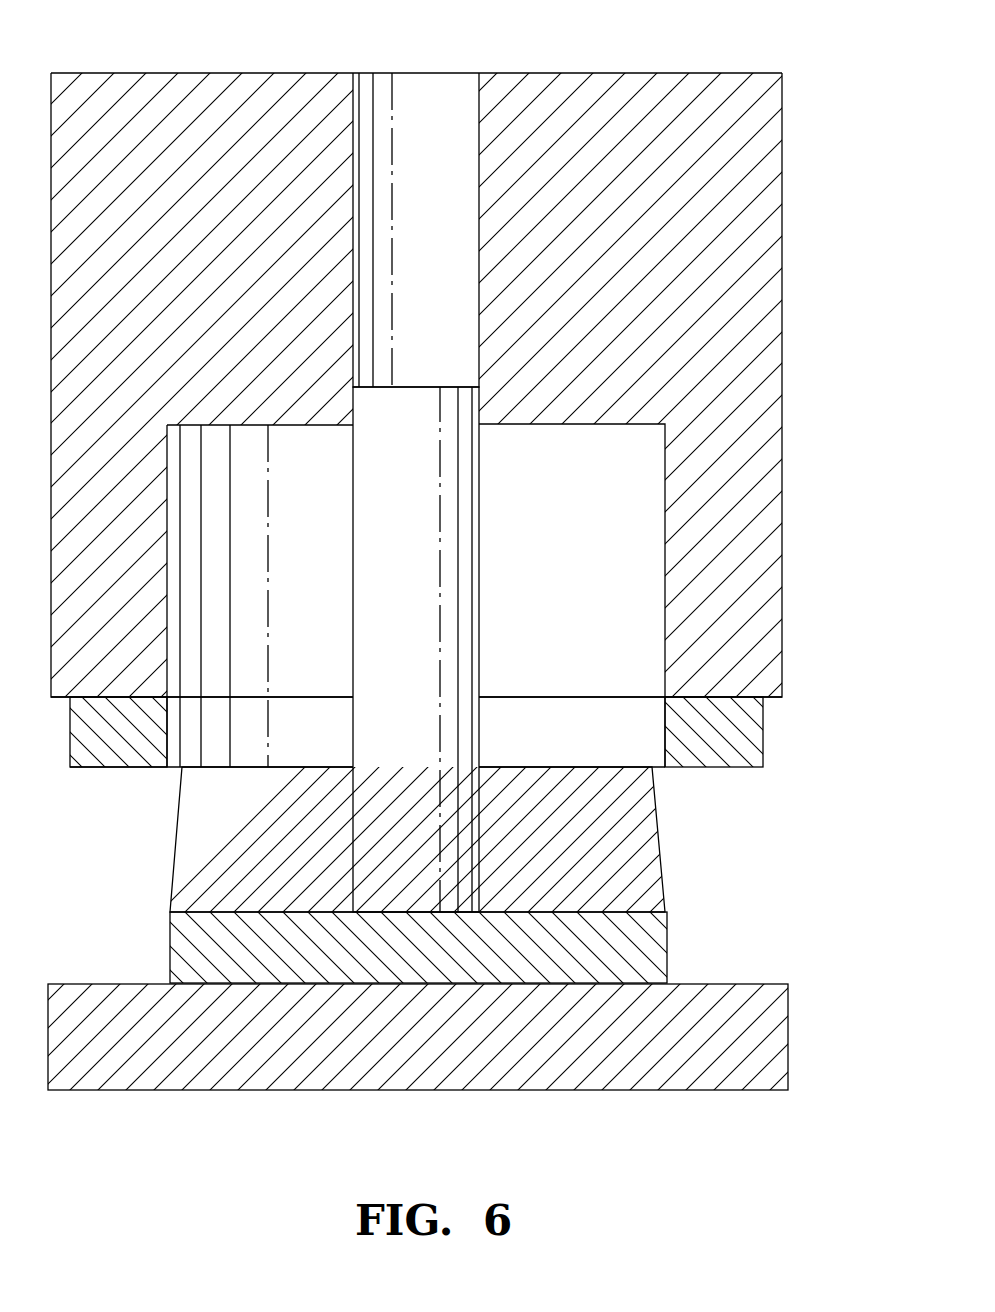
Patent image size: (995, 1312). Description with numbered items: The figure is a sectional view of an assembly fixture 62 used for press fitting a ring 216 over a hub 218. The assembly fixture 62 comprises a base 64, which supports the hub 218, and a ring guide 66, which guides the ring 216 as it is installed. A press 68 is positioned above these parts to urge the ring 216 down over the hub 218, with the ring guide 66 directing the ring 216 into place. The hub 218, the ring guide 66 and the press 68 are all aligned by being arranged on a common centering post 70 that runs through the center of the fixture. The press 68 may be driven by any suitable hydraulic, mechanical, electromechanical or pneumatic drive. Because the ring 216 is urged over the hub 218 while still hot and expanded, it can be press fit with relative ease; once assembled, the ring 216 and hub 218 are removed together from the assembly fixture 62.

The assembly fixture 62 is at (806, 86).
The press 68 is at (782, 220).
The centering post 70 is at (478, 512).
The ring 216 is at (763, 735).
The ring guide 66 is at (657, 827).
The hub 218 is at (667, 923).
The base 64 is at (788, 1045).